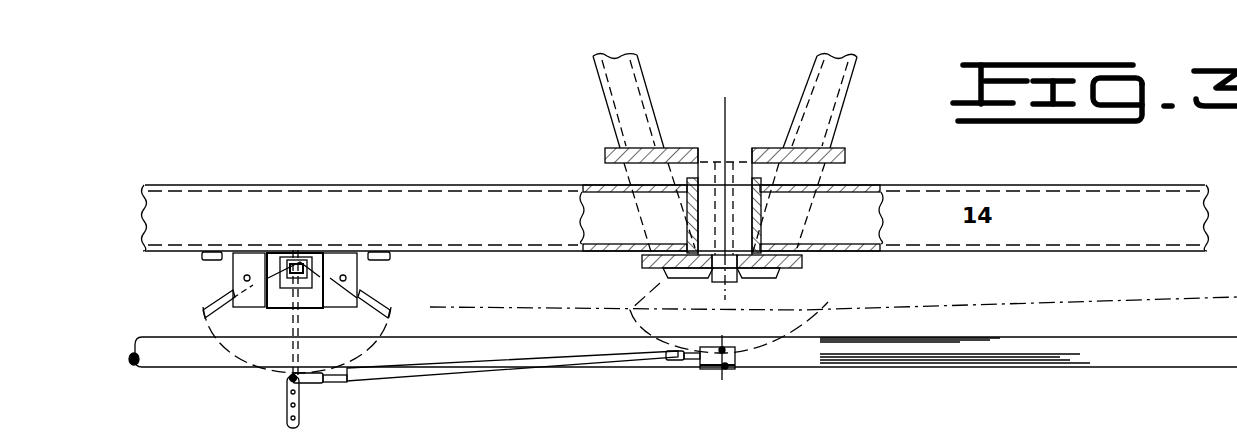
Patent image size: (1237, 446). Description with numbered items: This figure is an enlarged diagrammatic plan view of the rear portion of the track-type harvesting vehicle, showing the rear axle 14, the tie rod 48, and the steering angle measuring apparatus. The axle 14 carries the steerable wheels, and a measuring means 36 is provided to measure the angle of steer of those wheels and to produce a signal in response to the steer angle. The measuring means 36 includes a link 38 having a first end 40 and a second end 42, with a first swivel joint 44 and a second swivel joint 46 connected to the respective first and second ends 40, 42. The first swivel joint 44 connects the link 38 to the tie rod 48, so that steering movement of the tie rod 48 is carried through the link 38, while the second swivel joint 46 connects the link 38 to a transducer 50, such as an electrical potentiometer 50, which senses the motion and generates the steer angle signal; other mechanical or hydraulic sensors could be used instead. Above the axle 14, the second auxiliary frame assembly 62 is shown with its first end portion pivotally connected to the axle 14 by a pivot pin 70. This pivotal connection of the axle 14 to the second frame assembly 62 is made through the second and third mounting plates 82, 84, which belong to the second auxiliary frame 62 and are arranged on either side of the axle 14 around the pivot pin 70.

The axle 14 is at (992, 228).
The measuring means 36 is at (457, 388).
The link 38 is at (495, 367).
The first end 40 is at (667, 358).
The second end 42 is at (358, 370).
The first swivel joint 44 is at (702, 367).
The second swivel joint 46 is at (307, 388).
The tie rod 48 is at (808, 360).
The transducer 50 is at (300, 263).
The second auxiliary frame assembly 62 is at (616, 99).
The pivot pin 70 is at (745, 202).
The second mounting plate 82 is at (844, 149).
The third mounting plate 84 is at (797, 261).